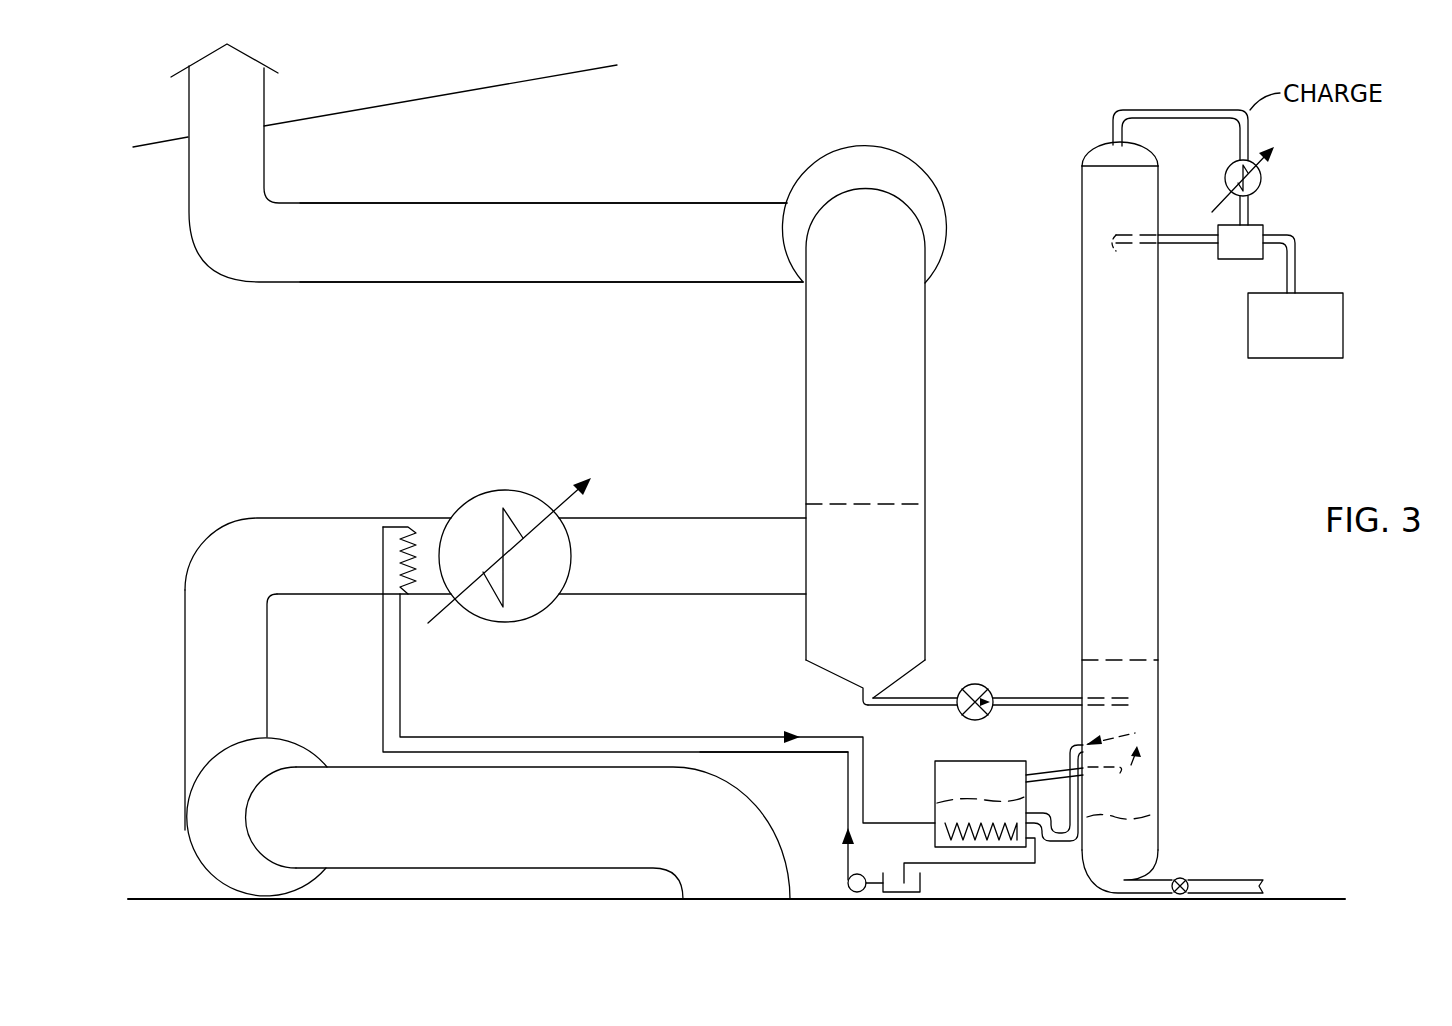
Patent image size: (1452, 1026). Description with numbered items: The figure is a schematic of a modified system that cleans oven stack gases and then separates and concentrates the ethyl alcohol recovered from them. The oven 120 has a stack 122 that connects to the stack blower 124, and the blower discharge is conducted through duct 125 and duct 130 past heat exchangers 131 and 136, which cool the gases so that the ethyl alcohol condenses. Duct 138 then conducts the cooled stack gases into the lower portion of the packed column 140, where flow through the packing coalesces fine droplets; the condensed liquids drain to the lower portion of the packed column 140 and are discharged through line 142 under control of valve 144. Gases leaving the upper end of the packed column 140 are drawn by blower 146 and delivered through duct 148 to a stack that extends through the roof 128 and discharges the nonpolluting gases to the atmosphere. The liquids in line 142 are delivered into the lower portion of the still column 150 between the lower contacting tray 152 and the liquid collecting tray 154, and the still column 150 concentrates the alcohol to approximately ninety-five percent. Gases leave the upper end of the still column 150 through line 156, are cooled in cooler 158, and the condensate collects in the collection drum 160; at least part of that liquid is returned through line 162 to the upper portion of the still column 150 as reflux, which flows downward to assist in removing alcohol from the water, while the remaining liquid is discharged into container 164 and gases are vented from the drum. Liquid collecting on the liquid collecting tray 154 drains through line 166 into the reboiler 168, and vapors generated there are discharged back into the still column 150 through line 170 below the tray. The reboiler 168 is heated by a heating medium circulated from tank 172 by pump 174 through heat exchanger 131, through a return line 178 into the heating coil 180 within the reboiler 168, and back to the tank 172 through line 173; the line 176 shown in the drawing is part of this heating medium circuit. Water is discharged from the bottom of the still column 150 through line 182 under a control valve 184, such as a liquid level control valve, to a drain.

The oven 120 is at (453, 898).
The stack 122 is at (560, 843).
The stack blower 124 is at (293, 737).
The duct 125 is at (268, 628).
The roof 128 is at (328, 115).
The duct 130 is at (253, 518).
The heat exchanger 131 is at (408, 527).
The heat exchanger 136 is at (495, 492).
The duct 138 is at (657, 518).
The packed column 140 is at (925, 433).
The line 142 is at (927, 695).
The valve 144 is at (983, 684).
The blower 146 is at (812, 168).
The duct 148 is at (420, 203).
The still column 150 is at (1158, 472).
The lower contacting tray 152 is at (1127, 658).
The liquid collecting tray 154 is at (1140, 730).
The line 156 is at (1140, 108).
The cooler 158 is at (1262, 172).
The collection drum 160 is at (1265, 224).
The line 162 is at (1193, 248).
The container 164 is at (1343, 310).
The line 166 is at (1073, 745).
The reboiler 168 is at (953, 761).
The line 170 is at (1053, 783).
The tank 172 is at (925, 881).
The line 173 is at (1013, 865).
The pump 174 is at (849, 880).
The feed line 176 is at (775, 753).
The return line 178 is at (538, 737).
The heating coil 180 is at (953, 830).
The line 182 is at (1232, 883).
The control valve 184 is at (1180, 877).